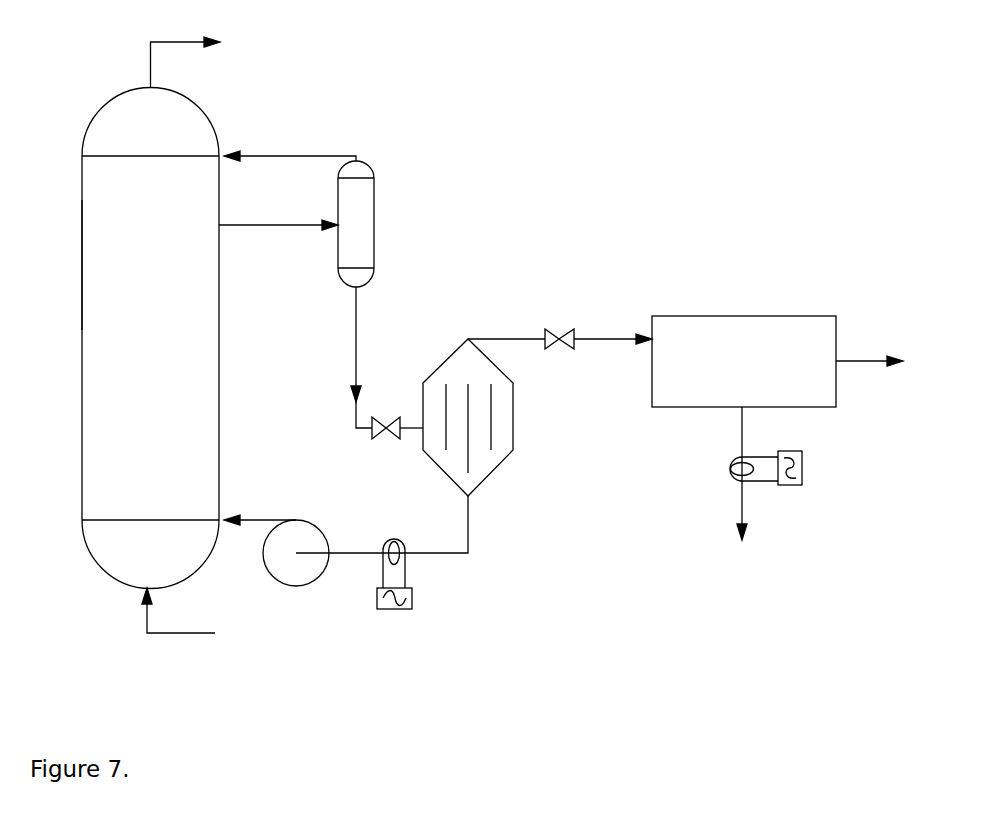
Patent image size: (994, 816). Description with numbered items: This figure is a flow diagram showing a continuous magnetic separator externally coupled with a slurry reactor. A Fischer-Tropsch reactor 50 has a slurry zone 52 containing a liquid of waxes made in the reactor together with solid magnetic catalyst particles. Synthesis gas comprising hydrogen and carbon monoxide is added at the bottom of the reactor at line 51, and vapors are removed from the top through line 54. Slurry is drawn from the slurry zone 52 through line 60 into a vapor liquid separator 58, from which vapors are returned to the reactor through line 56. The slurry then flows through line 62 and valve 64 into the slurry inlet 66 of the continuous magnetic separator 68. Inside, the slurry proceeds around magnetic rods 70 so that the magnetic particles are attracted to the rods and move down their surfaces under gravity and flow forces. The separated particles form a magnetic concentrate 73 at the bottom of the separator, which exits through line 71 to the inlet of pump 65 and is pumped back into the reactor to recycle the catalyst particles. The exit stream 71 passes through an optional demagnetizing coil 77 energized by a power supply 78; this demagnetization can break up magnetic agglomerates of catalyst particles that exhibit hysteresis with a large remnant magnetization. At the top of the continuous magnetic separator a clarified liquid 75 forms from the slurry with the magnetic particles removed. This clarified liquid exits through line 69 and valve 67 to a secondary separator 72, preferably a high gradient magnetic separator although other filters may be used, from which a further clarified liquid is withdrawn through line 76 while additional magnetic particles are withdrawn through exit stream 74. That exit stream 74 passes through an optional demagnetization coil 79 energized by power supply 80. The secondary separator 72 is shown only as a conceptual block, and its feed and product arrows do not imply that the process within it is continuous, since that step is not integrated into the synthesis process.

The Fischer-Tropsch reactor 50 is at (82, 407).
The line 51 is at (190, 615).
The slurry zone 52 is at (90, 266).
The line 54 is at (175, 39).
The line 56 is at (281, 152).
The vapor liquid separator 58 is at (378, 225).
The line 60 is at (275, 233).
The line 62 is at (352, 337).
The valve 64 is at (386, 440).
The pump 65 is at (298, 590).
The slurry inlet 66 is at (416, 424).
The valve 67 is at (557, 331).
The continuous magnetic separator 68 is at (510, 463).
The line 69 is at (512, 335).
The magnetic rods 70 is at (493, 423).
The line 71 is at (458, 559).
The secondary separator 72 is at (693, 412).
The magnetic concentrate 73 is at (470, 484).
The exit stream 74 is at (743, 486).
The clarified liquid 75 is at (473, 361).
The line 76 is at (883, 361).
The demagnetizing coil 77 is at (388, 538).
The power supply 78 is at (415, 602).
The demagnetization coil 79 is at (727, 475).
The power supply 80 is at (803, 490).